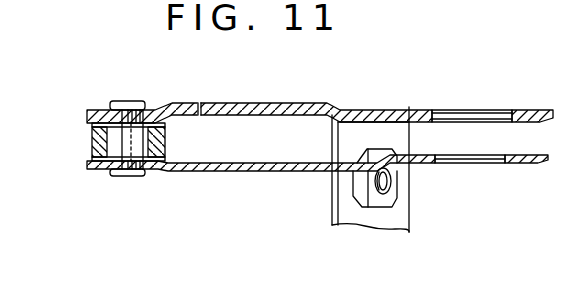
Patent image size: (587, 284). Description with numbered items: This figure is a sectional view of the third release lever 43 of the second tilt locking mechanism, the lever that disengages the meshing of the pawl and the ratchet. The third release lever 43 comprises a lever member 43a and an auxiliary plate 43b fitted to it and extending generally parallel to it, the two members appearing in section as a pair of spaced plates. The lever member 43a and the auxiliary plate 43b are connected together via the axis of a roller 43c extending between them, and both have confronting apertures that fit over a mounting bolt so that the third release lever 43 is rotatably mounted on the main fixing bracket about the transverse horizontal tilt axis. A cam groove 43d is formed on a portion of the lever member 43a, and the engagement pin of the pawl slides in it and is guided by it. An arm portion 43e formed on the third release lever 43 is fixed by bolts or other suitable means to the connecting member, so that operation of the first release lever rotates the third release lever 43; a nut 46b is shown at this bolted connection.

The third release lever 43 is at (90, 135).
The lever member 43a is at (341, 104).
The auxiliary plate 43b is at (300, 172).
The roller 43c is at (166, 140).
The cam groove 43d is at (246, 103).
The arm portion 43e is at (400, 217).
The nut 46b is at (394, 183).